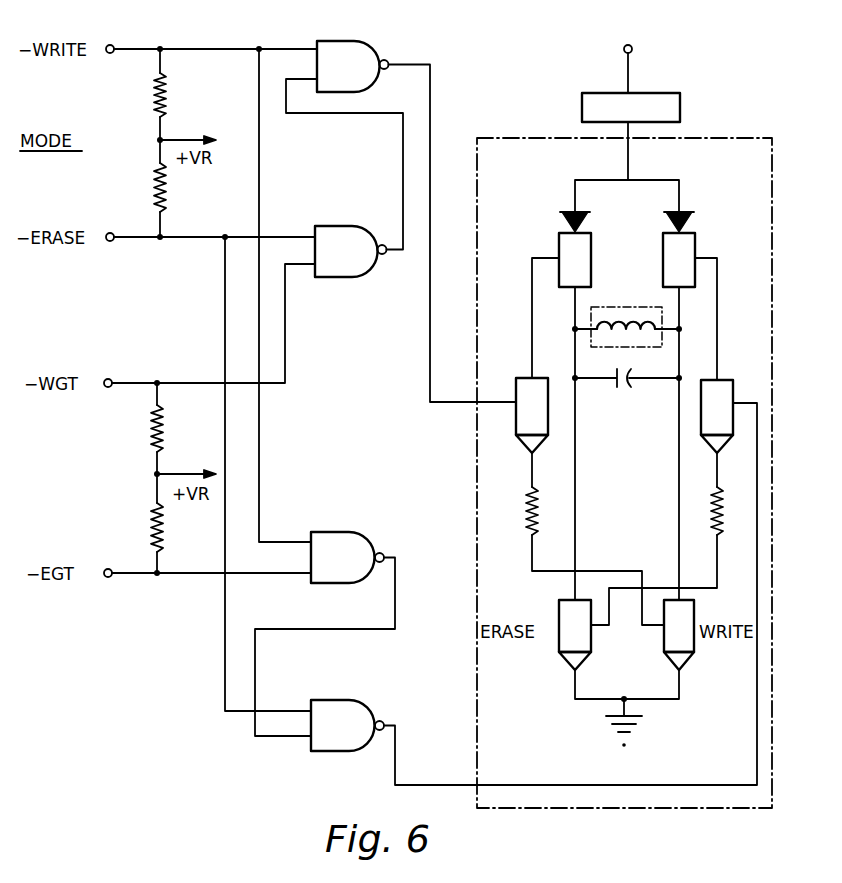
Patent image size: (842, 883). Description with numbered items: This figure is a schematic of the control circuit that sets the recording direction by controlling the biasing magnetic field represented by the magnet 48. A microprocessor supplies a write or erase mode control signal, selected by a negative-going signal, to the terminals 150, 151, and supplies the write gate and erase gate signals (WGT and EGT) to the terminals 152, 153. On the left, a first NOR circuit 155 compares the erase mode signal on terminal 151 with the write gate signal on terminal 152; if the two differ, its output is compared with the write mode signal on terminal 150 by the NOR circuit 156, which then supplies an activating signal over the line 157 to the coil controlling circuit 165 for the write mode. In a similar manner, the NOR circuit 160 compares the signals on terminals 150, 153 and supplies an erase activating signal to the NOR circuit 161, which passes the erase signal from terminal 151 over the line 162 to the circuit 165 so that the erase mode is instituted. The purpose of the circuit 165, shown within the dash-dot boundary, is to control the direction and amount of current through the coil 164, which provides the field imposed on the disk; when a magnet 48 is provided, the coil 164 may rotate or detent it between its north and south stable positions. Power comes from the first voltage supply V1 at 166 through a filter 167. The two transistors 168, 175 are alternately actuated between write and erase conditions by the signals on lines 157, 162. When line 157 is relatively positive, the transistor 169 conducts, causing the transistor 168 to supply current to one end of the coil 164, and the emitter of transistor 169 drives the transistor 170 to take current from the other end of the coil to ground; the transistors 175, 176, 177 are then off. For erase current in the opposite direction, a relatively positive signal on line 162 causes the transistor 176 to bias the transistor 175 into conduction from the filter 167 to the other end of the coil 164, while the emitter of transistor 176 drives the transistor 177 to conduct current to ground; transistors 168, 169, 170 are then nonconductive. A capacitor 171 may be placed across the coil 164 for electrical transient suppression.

The magnet 48 is at (606, 340).
The write mode terminal 150 is at (111, 45).
The erase mode terminal 151 is at (111, 242).
The write gate terminal 152 is at (109, 378).
The erase gate terminal 153 is at (109, 578).
The first NOR circuit 155 is at (372, 201).
The NOR circuit 156 is at (366, 41).
The line 157 is at (430, 78).
The NOR circuit 160 is at (384, 512).
The NOR circuit 161 is at (384, 676).
The line 162 is at (459, 786).
The coil 164 is at (619, 318).
The coil controlling circuit 165 is at (714, 138).
The first voltage supply V1 166 is at (633, 51).
The filter 167 is at (658, 93).
The transistor 168 is at (559, 242).
The transistor 169 is at (516, 384).
The transistor 170 is at (694, 606).
The capacitor 171 is at (622, 386).
The transistor 175 is at (696, 244).
The transistor 176 is at (734, 394).
The transistor 177 is at (559, 607).